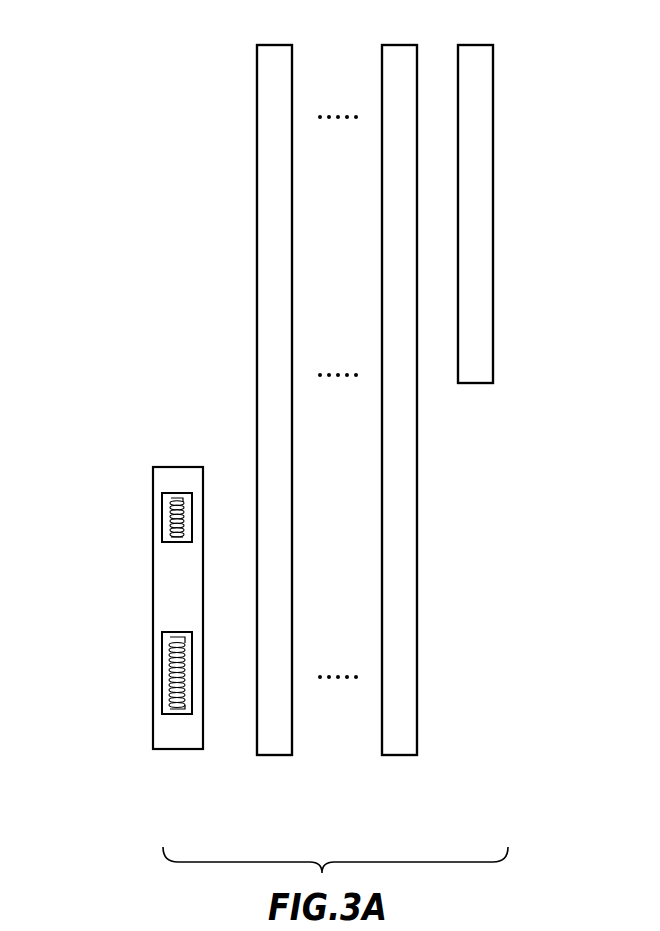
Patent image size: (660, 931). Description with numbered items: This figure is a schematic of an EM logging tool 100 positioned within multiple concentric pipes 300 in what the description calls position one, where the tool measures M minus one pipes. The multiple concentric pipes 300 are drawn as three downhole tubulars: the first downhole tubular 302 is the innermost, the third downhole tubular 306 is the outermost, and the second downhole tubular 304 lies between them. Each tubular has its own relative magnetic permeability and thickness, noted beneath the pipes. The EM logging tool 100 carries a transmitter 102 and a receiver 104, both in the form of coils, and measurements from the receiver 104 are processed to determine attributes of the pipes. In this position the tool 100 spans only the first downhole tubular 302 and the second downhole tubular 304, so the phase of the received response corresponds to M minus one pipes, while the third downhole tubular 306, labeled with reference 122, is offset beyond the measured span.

The multiple concentric pipes 300 is at (247, 38).
The first downhole tubular 302 is at (277, 60).
The second downhole tubular 304 is at (400, 53).
The Mth tissue sample / object 122 is at (465, 33).
The third downhole tubular 306 is at (480, 117).
The EM logging tool 100 is at (153, 725).
The transmitter 102 is at (165, 671).
The receiver 104 is at (165, 515).